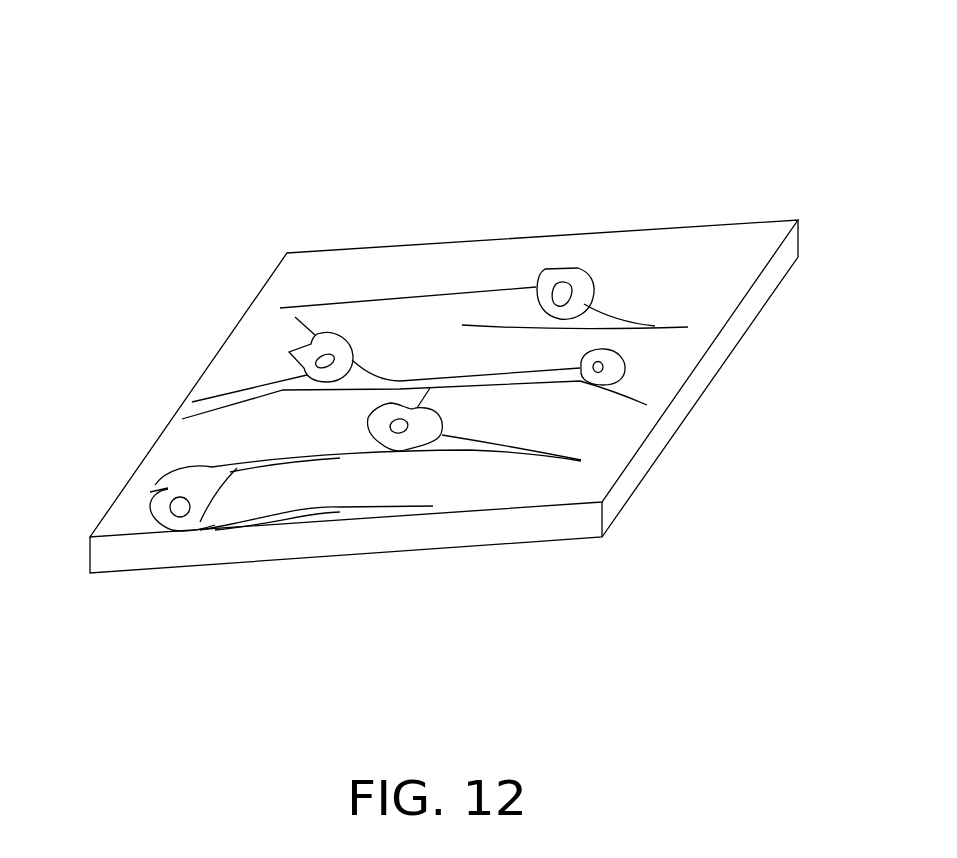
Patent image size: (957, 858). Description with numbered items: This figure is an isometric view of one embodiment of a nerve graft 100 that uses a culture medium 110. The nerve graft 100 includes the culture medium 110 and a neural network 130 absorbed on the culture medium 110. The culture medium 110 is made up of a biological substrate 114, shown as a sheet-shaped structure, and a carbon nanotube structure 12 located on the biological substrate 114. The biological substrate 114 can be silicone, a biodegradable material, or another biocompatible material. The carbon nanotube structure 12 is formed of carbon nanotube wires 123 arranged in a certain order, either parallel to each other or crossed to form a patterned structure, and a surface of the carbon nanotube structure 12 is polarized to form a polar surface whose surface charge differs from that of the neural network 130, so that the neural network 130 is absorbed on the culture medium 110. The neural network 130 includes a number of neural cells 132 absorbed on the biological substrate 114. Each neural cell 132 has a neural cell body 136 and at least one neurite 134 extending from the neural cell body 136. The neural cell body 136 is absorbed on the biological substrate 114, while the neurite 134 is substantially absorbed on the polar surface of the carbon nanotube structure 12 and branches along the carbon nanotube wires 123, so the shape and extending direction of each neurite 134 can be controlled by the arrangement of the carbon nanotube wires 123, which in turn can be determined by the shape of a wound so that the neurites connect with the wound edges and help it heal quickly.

The nerve graft 100 is at (490, 54).
The culture medium 110 is at (798, 405).
The biological substrate 114 is at (688, 393).
The carbon nanotube structure 12 is at (585, 461).
The neural network 130 is at (340, 320).
The carbon nanotube wires 123 is at (290, 308).
The neural cell 132 is at (735, 168).
The neurite 134 is at (510, 322).
The neural cell body 136 is at (585, 268).